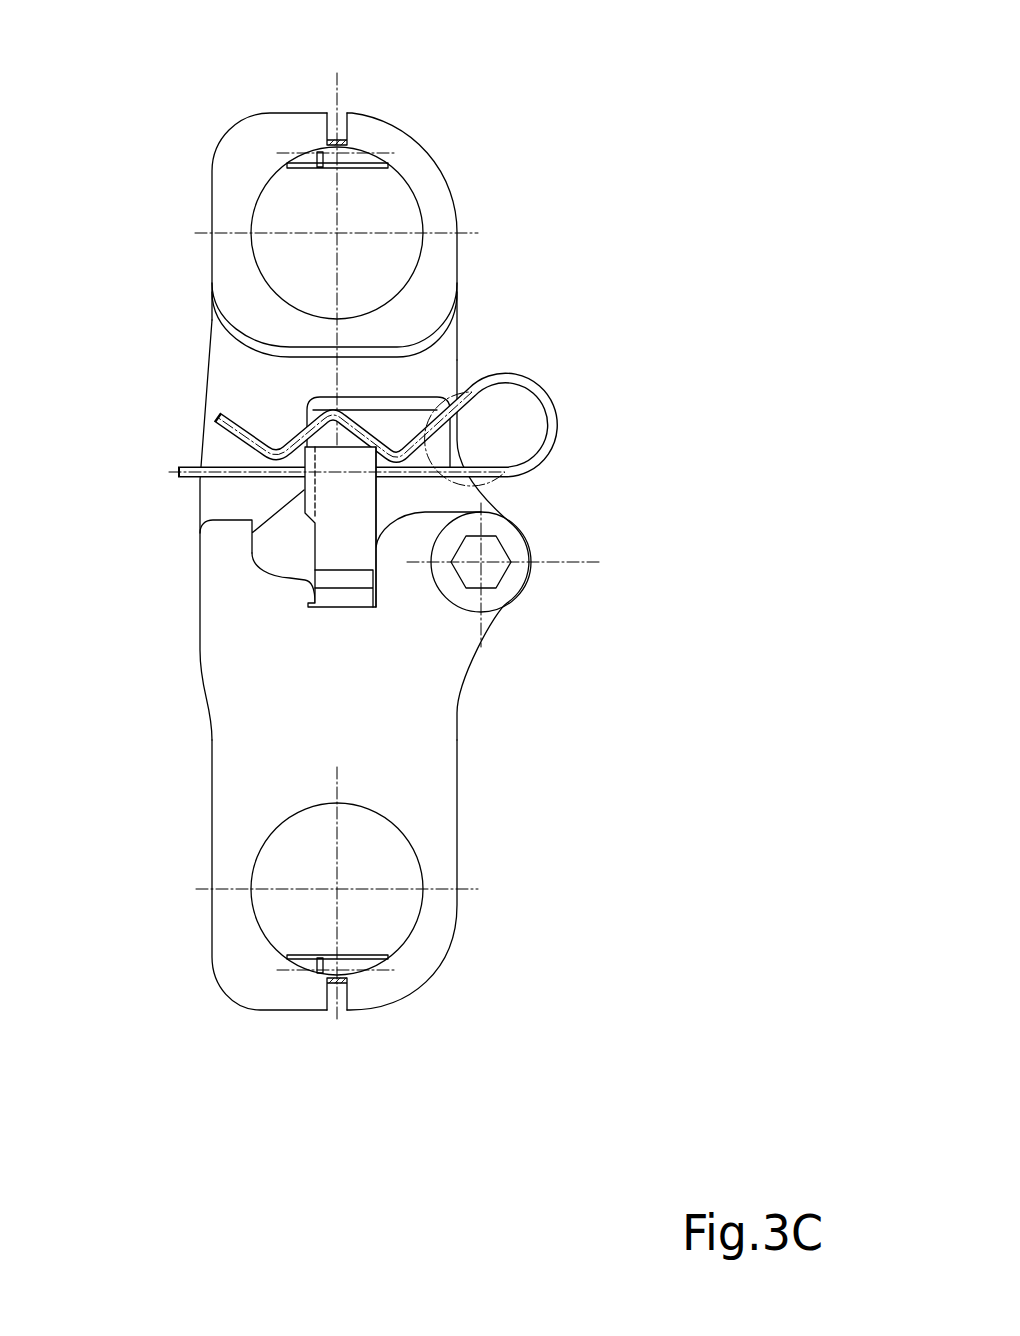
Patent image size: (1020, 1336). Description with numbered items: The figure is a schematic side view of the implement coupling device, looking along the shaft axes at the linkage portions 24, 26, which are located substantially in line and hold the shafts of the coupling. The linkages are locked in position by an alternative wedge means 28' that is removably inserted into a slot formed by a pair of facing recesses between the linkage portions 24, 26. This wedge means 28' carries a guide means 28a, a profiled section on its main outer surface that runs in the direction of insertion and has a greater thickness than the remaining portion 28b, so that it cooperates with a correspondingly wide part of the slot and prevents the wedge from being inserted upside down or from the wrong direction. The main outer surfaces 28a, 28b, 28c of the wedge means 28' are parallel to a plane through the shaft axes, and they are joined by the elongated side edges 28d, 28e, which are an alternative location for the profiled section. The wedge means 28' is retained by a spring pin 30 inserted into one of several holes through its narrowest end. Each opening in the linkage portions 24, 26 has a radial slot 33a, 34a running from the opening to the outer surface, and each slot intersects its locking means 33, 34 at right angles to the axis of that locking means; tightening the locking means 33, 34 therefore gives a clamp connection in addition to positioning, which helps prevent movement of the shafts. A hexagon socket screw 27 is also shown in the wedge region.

The linkage portion 24 is at (433, 183).
The linkage portion 26 is at (425, 960).
The hexagon socket screw 27 is at (503, 543).
The alternative wedge means 28' is at (288, 530).
The guide means 28a is at (294, 499).
The remaining portion 28b is at (296, 550).
The main outer surface 28c is at (376, 548).
The elongated side edge 28d is at (340, 612).
The elongated side edge 28e is at (342, 445).
The spring pin 30 is at (528, 382).
The locking means 33 is at (328, 168).
The radial slot 33a is at (341, 88).
The locking means 34 is at (333, 957).
The radial slot 34a is at (334, 1024).